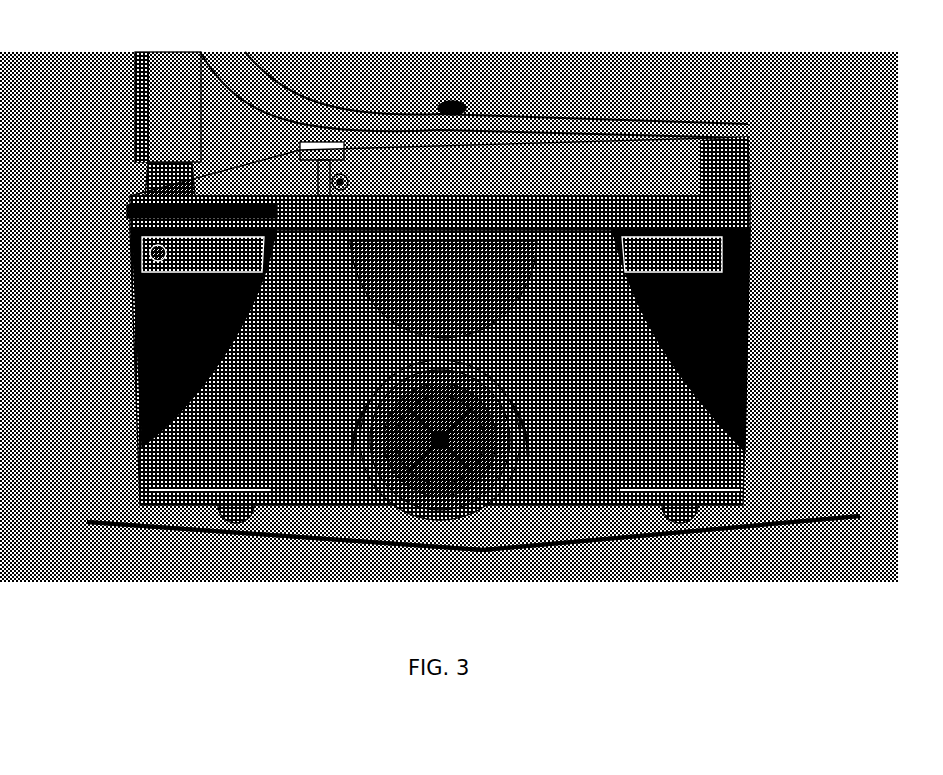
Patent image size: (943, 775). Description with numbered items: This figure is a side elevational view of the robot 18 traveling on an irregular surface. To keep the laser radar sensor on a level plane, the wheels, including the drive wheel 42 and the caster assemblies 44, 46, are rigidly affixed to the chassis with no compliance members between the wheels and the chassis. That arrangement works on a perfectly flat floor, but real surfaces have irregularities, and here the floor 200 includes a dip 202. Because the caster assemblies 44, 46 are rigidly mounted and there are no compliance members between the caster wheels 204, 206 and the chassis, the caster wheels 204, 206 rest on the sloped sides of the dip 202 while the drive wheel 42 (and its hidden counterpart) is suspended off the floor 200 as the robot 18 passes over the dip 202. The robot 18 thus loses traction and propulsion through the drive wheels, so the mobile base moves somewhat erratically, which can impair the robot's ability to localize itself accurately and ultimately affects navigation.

The robot 18 is at (446, 339).
The drive wheel 42 is at (415, 522).
The caster assembly 44 is at (243, 538).
The caster assembly 46 is at (678, 535).
The floor 200 is at (768, 532).
The dip 202 is at (490, 553).
The caster wheel 204 is at (218, 531).
The caster wheel 206 is at (660, 531).